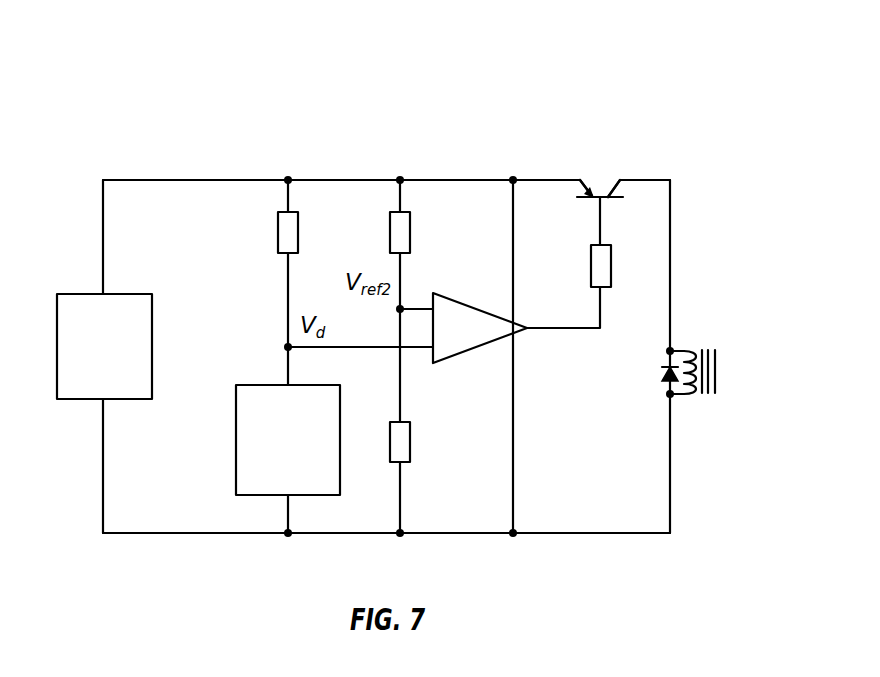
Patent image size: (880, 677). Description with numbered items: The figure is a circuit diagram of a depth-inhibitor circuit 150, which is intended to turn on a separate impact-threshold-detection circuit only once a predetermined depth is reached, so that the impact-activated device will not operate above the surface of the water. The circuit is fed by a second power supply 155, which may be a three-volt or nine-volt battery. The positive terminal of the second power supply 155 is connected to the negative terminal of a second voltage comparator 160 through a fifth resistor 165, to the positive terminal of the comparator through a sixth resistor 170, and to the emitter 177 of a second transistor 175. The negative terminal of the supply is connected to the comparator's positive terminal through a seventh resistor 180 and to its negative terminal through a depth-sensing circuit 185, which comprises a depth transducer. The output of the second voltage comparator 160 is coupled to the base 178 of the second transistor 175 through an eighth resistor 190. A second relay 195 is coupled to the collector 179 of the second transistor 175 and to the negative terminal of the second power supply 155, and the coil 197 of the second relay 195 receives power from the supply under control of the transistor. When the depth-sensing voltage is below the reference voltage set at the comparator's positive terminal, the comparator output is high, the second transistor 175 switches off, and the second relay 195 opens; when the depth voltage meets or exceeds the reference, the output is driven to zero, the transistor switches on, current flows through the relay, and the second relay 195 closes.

The depth-inhibitor circuit 150 is at (636, 58).
The second power supply 155 is at (135, 294).
The second voltage comparator 160 is at (468, 350).
The fifth resistor 165 is at (278, 226).
The sixth resistor 170 is at (390, 226).
The second transistor 175 is at (607, 150).
The emitter 177 is at (590, 194).
The base 178 is at (617, 200).
The collector 179 is at (612, 193).
The seventh resistor 180 is at (410, 444).
The depth-sensing circuit 185 is at (250, 385).
The eighth resistor 190 is at (591, 262).
The second relay 195 is at (677, 401).
The coil 197 is at (692, 350).